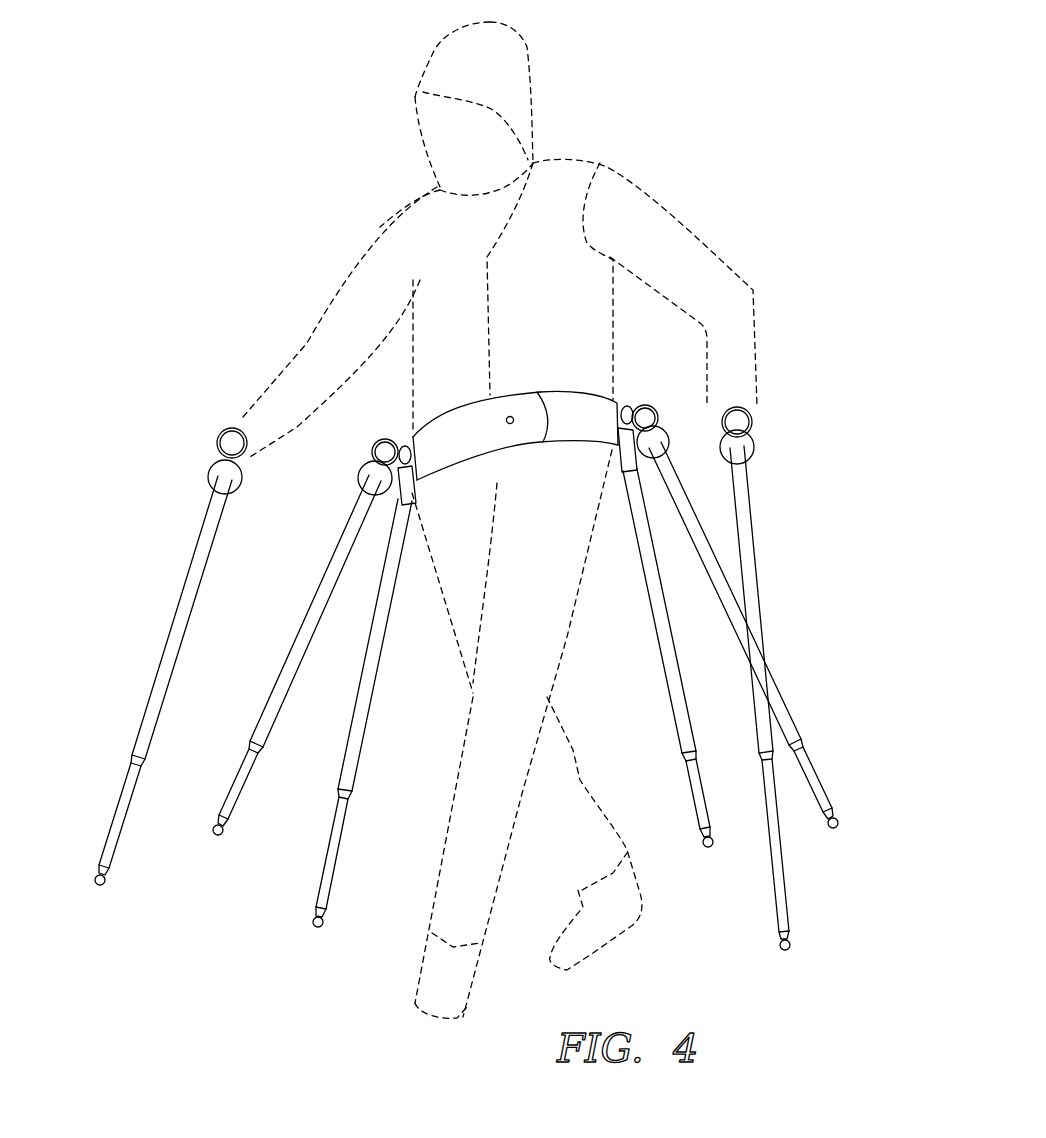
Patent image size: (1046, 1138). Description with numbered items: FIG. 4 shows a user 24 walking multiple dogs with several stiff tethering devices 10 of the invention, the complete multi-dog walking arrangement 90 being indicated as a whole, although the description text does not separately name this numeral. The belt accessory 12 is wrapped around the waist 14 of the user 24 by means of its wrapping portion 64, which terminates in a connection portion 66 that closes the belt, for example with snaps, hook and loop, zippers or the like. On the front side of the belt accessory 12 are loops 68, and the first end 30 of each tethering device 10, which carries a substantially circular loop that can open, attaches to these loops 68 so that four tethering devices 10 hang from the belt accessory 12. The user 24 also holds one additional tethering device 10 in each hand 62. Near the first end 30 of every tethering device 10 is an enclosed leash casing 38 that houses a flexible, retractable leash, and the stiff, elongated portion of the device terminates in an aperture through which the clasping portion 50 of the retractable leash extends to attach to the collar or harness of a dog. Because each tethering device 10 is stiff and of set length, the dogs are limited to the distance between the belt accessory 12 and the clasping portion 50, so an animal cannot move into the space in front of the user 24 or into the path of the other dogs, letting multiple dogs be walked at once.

The tethering device 10 is at (385, 583).
The belt accessory 12 is at (549, 388).
The waist 14 is at (469, 388).
The user 24 is at (592, 148).
The first end 30 is at (216, 437).
The leash casing 38 is at (210, 473).
The clasping portion 50 is at (107, 886).
The hand 62 is at (238, 428).
The wrapping portion 64 is at (467, 447).
The connection portion 66 is at (513, 424).
The loops 68 is at (398, 445).
The walking assist device 90 is at (496, 699).